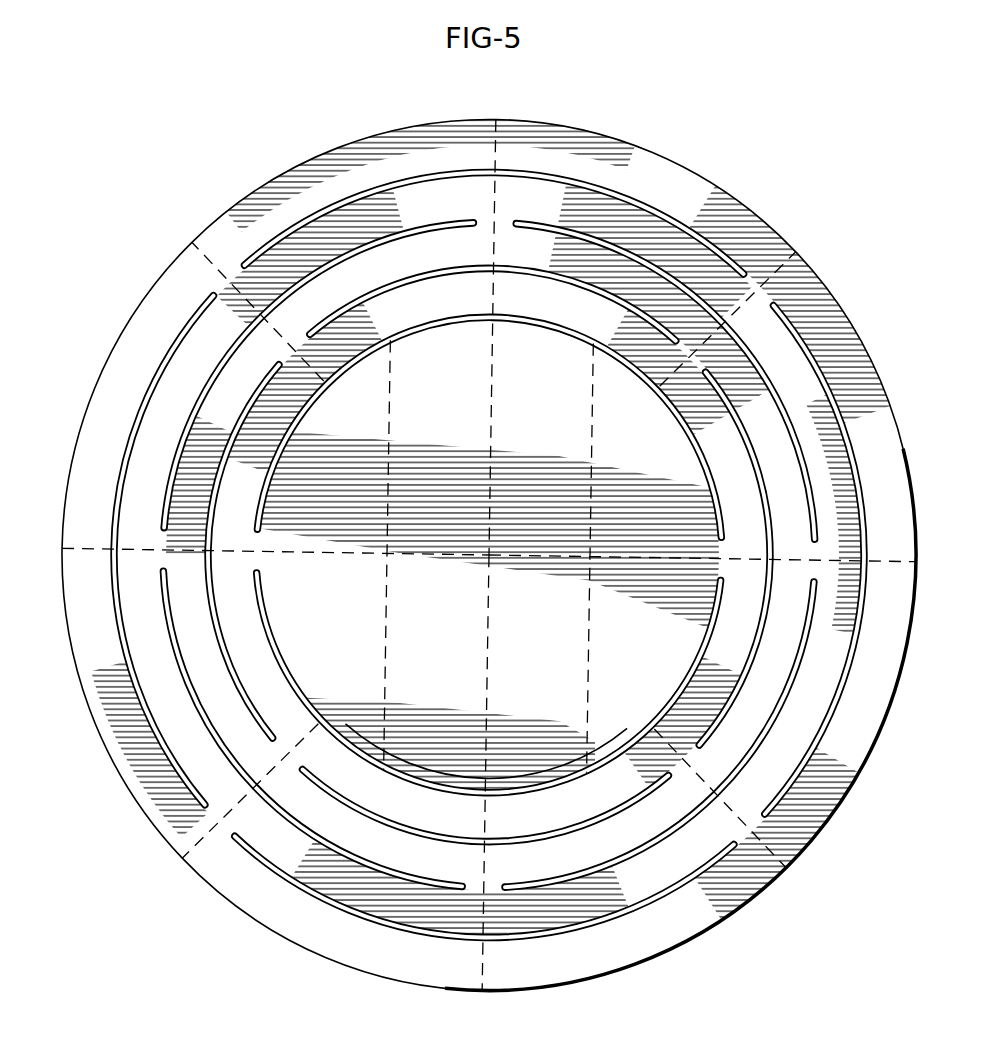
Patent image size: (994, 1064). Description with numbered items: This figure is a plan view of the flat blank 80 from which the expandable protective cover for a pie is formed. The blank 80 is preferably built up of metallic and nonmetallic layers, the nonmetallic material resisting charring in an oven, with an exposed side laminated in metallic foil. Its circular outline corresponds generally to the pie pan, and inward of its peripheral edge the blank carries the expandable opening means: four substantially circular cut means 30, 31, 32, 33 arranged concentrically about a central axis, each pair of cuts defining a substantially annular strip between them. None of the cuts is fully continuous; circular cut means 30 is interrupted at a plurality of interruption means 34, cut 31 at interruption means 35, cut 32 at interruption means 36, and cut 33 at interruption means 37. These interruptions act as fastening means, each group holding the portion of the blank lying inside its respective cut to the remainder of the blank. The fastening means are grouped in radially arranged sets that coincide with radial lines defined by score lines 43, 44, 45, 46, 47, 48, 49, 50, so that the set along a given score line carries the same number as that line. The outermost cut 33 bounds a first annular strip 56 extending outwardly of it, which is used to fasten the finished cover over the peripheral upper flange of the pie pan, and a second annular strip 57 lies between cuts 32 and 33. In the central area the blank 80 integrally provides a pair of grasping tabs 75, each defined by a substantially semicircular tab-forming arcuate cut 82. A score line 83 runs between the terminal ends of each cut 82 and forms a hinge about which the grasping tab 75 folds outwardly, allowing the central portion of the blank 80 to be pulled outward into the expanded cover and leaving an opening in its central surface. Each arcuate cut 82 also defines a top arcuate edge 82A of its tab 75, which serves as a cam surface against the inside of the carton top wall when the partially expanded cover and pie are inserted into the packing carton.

The blank 80 is at (713, 117).
The circular cut means 30 is at (415, 340).
The circular cut means 31 is at (389, 290).
The circular cut means 32 is at (383, 241).
The circular cut means 33 is at (375, 190).
The interruption means 34 is at (497, 325).
The interruption means 35 is at (305, 341).
The interruption means 36 is at (503, 226).
The interruption means 37 is at (233, 268).
The score line 43 is at (218, 268).
The score line 44 is at (88, 548).
The score line 45 is at (211, 856).
The score line 46 is at (482, 957).
The score line 47 is at (792, 848).
The score line 48 is at (887, 566).
The score line 49 is at (774, 274).
The score line 50 is at (494, 126).
The first annular strip 56 is at (634, 958).
The second annular strip 57 is at (580, 910).
The grasping tab 75 is at (345, 599).
The tab-forming arcuate cut 82 is at (714, 428).
The top arcuate edge 82A is at (697, 452).
The score line 83 is at (394, 421).